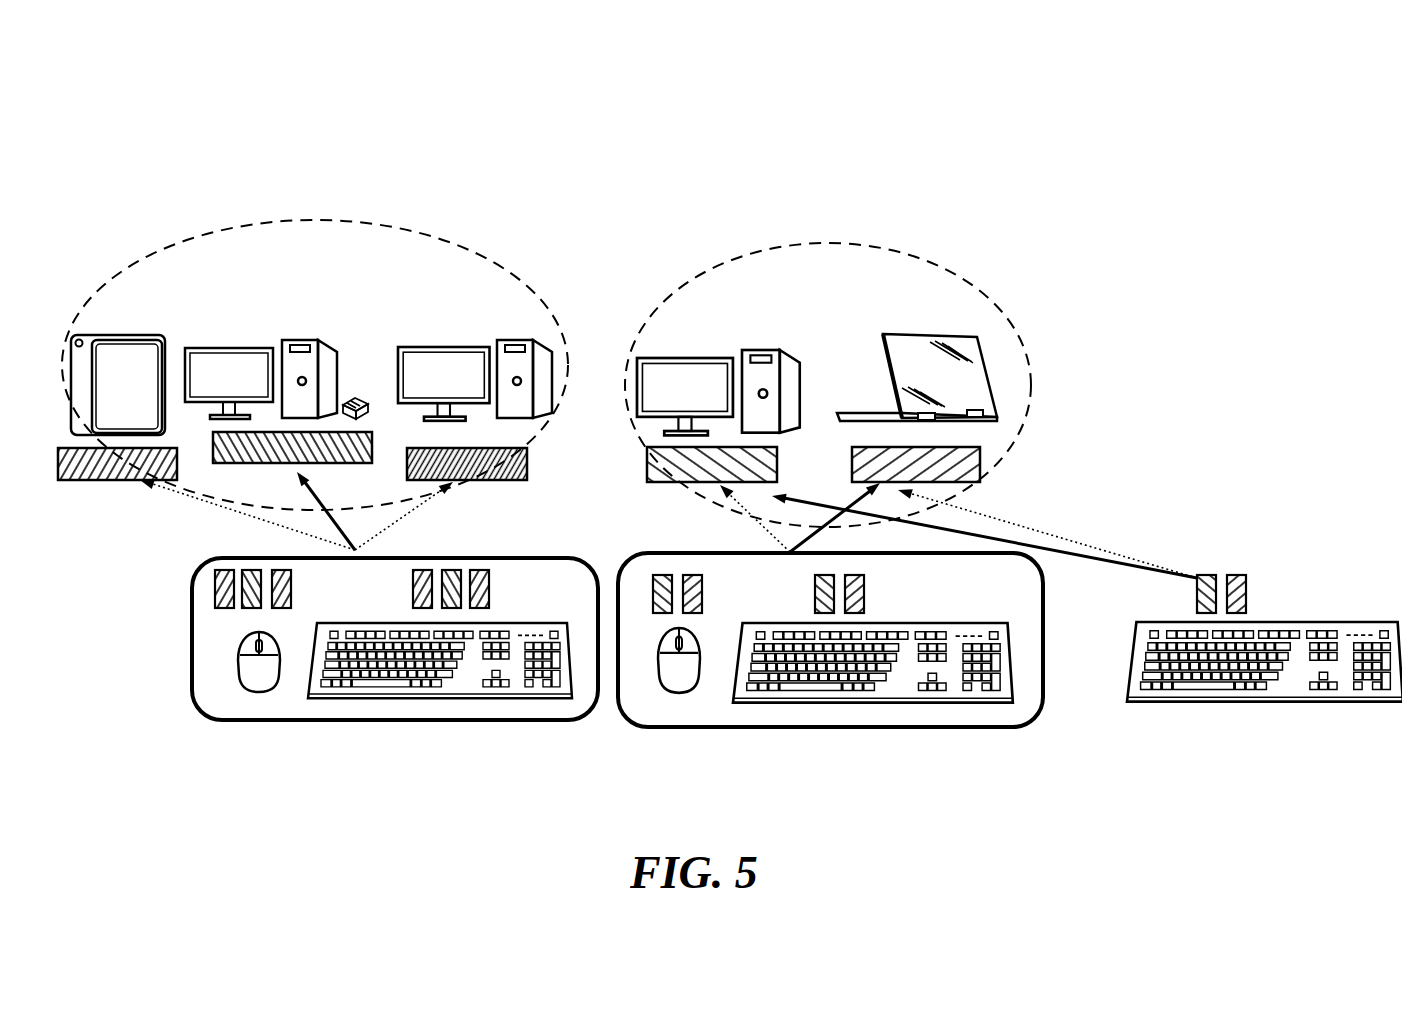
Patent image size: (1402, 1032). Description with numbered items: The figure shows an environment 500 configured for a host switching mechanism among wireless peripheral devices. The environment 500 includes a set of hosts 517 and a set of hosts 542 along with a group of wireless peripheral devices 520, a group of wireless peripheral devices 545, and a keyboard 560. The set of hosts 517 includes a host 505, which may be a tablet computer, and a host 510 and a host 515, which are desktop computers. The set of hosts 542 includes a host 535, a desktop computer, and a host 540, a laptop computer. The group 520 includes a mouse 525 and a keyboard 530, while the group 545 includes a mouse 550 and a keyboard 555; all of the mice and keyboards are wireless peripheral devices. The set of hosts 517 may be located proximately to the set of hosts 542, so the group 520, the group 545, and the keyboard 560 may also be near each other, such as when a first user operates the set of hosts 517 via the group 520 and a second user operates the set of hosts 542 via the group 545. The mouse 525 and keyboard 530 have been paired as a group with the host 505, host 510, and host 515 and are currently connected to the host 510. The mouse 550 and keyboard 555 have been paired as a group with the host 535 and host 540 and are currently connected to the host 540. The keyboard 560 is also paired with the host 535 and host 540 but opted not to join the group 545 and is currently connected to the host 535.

The environment 500 is at (222, 97).
The host 505 is at (123, 333).
The host 510 is at (283, 343).
The host 515 is at (497, 348).
The set of hosts 517 is at (537, 427).
The group of wireless peripheral devices 520 is at (437, 720).
The mouse 525 is at (257, 692).
The keyboard 530 is at (513, 698).
The host 535 is at (742, 355).
The host 540 is at (883, 348).
The set of hosts 542 is at (993, 455).
The group of wireless peripheral devices 545 is at (870, 727).
The mouse 550 is at (678, 693).
The keyboard 555 is at (873, 703).
The keyboard 560 is at (1277, 703).